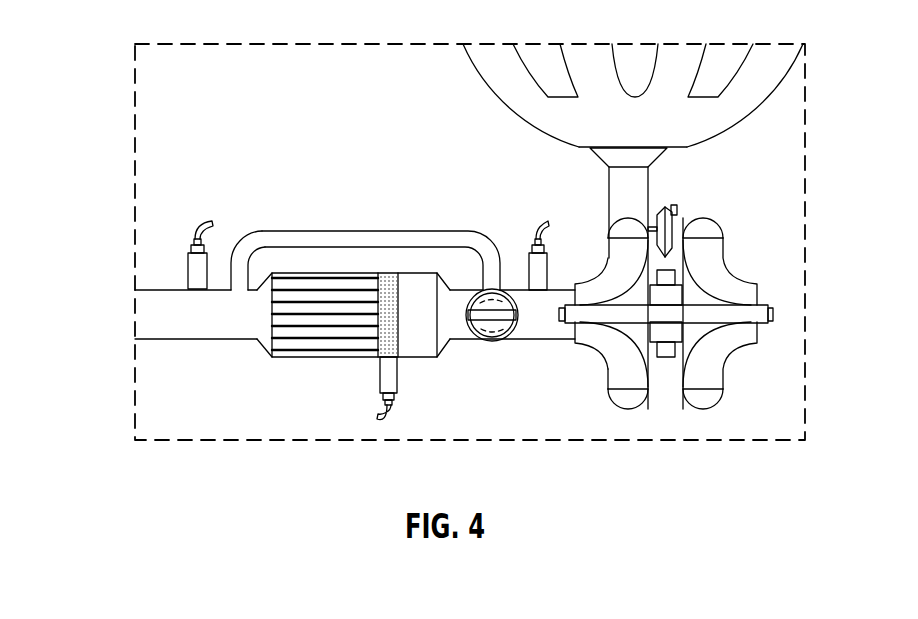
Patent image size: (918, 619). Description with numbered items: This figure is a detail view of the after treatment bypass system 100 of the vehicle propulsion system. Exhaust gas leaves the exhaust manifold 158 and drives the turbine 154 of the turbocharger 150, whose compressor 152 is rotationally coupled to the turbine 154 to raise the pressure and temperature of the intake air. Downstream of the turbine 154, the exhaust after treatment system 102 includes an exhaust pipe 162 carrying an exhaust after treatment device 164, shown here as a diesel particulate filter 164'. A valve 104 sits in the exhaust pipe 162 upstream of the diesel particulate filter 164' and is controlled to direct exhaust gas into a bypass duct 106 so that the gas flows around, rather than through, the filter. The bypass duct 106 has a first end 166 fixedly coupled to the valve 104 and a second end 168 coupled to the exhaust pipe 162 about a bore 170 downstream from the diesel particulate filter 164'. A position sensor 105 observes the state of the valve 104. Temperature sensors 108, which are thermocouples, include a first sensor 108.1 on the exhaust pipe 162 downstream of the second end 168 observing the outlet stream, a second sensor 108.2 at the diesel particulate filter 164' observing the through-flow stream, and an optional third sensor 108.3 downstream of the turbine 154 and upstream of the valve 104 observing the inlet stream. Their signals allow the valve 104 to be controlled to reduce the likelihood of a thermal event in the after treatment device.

The after treatment bypass system 100 is at (224, 116).
The exhaust after treatment system 102 is at (220, 375).
The valve 104 is at (510, 344).
The position sensor 105 is at (483, 288).
The bypass duct 106 is at (342, 221).
The sensors 108 is at (135, 237).
The first sensor 108.1 is at (190, 234).
The second sensor 108.2 is at (376, 406).
The third sensor 108.3 is at (548, 222).
The turbocharger 150 is at (678, 347).
The compressor 152 is at (730, 369).
The turbine 154 is at (630, 408).
The exhaust manifold 158 is at (717, 123).
The exhaust pipe 162 is at (535, 343).
The exhaust after treatment device 164 is at (347, 356).
The diesel particulate filter 164' is at (321, 335).
The first end 166 is at (500, 289).
The second end 168 is at (232, 288).
The bore 170 is at (211, 343).